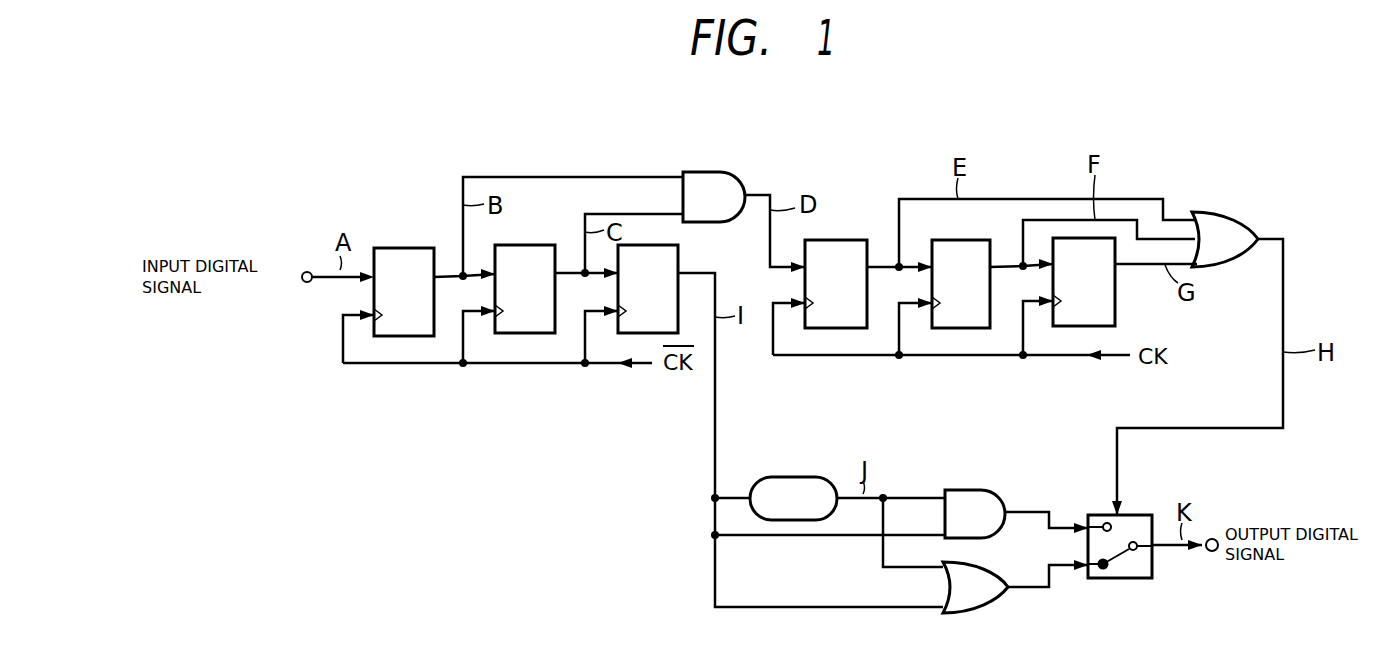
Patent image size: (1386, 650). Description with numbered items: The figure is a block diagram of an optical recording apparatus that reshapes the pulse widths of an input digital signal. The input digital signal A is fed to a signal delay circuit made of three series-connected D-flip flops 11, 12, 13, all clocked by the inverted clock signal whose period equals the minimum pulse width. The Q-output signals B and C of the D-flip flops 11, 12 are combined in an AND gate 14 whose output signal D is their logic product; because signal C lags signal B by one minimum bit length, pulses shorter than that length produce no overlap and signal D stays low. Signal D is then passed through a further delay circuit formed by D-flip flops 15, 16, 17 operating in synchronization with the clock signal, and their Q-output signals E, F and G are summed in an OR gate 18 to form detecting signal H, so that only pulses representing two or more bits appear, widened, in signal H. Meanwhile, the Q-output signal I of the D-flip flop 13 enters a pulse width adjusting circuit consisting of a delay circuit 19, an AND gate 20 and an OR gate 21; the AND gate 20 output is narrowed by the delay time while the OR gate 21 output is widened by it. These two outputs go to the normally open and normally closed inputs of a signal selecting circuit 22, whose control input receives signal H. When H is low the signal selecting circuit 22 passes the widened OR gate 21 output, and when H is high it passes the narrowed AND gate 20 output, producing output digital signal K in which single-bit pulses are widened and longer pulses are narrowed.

The D-flip flop 11 is at (413, 248).
The D-flip flop 12 is at (540, 245).
The D-flip flop 13 is at (678, 250).
The AND gate 14 is at (706, 172).
The D-flip flop 15 is at (857, 240).
The D-flip flop 16 is at (963, 240).
The D-flip flop 17 is at (1115, 314).
The OR gate 18 is at (1213, 212).
The delay circuit 19 is at (797, 477).
The AND gate 20 is at (980, 490).
The OR gate 21 is at (996, 563).
The signal selecting circuit 22 is at (1143, 515).